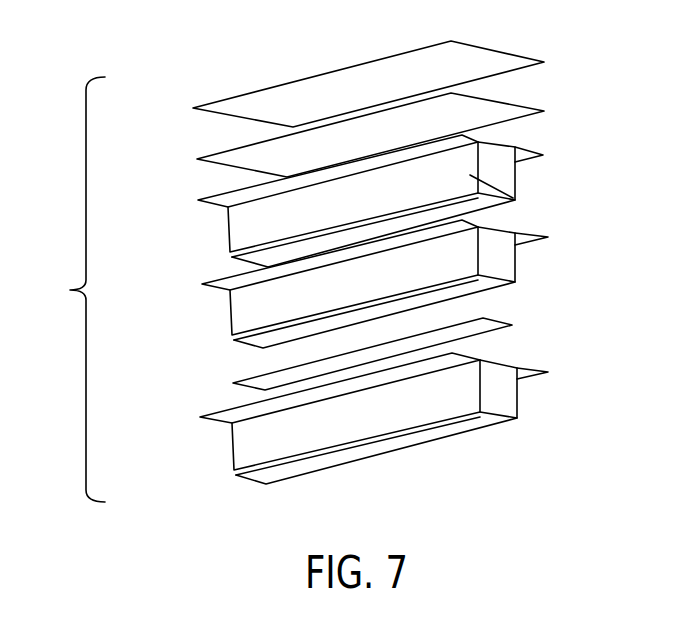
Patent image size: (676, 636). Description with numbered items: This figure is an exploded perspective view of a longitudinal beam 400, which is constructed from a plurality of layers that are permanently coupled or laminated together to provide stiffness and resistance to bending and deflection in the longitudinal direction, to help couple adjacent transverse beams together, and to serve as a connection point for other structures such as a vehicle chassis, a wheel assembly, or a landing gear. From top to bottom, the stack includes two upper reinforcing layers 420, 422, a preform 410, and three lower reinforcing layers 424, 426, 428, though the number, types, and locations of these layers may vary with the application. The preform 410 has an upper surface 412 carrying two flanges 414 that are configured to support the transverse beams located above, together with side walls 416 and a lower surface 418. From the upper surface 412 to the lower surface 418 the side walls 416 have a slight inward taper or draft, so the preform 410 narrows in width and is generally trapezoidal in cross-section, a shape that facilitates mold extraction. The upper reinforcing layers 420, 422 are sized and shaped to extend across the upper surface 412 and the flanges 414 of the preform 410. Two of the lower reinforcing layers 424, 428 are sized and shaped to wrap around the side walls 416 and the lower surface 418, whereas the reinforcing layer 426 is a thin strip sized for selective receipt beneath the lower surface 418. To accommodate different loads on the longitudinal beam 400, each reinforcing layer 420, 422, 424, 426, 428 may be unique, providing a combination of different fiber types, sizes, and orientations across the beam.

The longitudinal beam 400 is at (308, 270).
The preform 410 is at (370, 195).
The upper surface 412 is at (517, 147).
The flanges 414 is at (226, 200).
The side walls 416 is at (515, 199).
The lower surface 418 is at (233, 256).
The upper reinforcing layer 420 is at (520, 61).
The upper reinforcing layer 422 is at (520, 113).
The lower reinforcing layer 424 is at (472, 263).
The reinforcing layer 426 is at (495, 327).
The lower reinforcing layer 428 is at (475, 395).